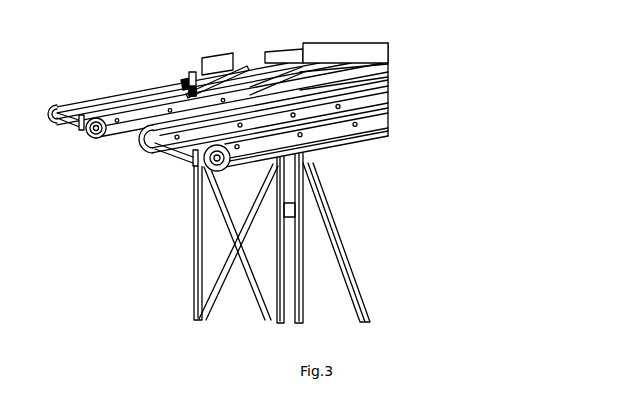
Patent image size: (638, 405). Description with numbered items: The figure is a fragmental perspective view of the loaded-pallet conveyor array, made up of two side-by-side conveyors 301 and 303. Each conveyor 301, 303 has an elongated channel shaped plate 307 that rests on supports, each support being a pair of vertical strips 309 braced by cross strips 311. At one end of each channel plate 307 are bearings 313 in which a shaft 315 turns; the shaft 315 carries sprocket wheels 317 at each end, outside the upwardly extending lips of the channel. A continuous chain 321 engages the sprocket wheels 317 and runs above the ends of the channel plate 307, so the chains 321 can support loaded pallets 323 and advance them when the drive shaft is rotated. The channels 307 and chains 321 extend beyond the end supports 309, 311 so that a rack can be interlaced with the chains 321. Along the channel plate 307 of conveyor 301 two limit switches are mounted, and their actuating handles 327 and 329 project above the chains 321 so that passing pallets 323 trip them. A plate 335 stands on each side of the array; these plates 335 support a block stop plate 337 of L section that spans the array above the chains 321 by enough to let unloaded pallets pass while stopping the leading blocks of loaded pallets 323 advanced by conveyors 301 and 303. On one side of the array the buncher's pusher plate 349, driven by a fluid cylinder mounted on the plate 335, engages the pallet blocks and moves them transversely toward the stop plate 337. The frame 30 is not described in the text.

The support frame 30 is at (250, 229).
The conveyor 301 is at (54, 143).
The conveyor 303 is at (168, 181).
The channel shaped plate 307 is at (70, 128).
The vertical strips 309 is at (194, 257).
The cross strips 311 is at (253, 298).
The bearings 313 is at (60, 114).
The shaft 315 is at (67, 107).
The sprocket wheels 317 is at (97, 135).
The continuous chain 321 is at (317, 150).
The loaded pallets 323 is at (263, 62).
The actuating handle 327 is at (183, 84).
The actuating handle 329 is at (247, 72).
The plate 335 is at (193, 72).
The block stop plate 337 is at (330, 45).
The pusher plate 349 is at (215, 57).